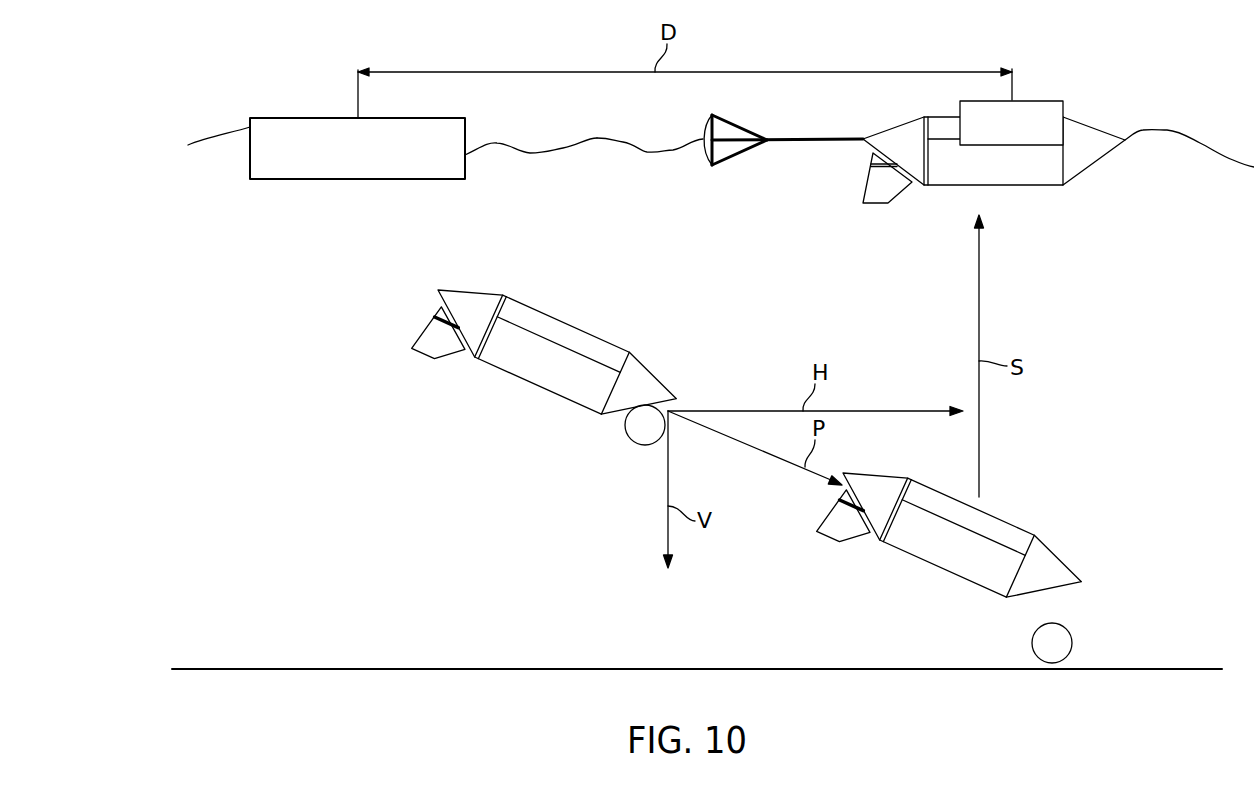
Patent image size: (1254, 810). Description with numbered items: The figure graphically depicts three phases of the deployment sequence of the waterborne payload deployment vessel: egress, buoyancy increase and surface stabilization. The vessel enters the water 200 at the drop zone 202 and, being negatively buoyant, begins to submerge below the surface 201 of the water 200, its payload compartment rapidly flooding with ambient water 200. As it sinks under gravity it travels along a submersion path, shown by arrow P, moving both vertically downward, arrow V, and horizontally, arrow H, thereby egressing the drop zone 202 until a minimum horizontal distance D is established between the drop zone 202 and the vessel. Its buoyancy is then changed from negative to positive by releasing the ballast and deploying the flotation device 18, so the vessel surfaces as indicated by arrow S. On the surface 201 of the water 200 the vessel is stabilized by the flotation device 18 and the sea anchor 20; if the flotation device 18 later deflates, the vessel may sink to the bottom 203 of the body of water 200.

The flotation device 18 is at (1043, 101).
The sea anchor 20 is at (703, 152).
The water 200 is at (617, 158).
The surface of the water 201 is at (568, 141).
The drop zone 202 is at (296, 118).
The bottom of the body of water 203 is at (583, 669).